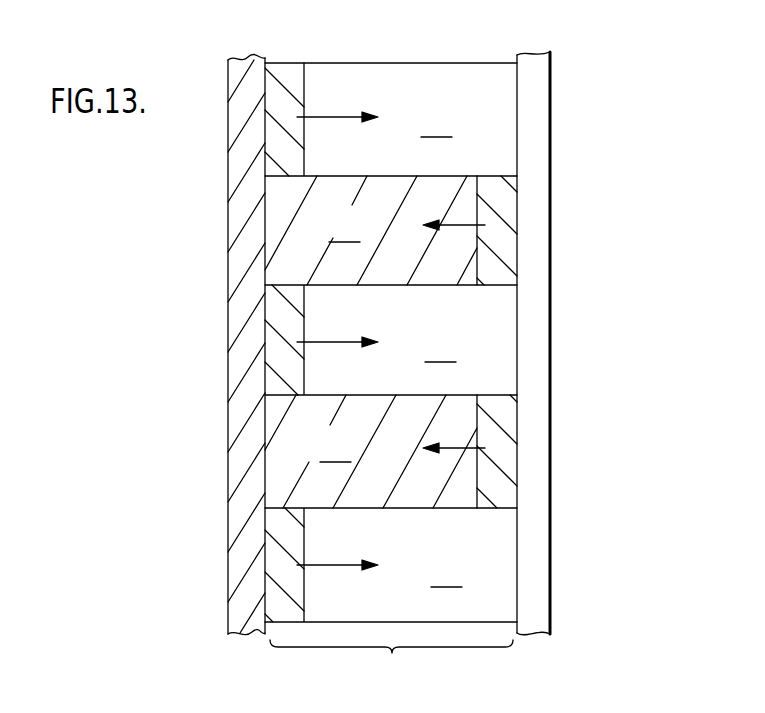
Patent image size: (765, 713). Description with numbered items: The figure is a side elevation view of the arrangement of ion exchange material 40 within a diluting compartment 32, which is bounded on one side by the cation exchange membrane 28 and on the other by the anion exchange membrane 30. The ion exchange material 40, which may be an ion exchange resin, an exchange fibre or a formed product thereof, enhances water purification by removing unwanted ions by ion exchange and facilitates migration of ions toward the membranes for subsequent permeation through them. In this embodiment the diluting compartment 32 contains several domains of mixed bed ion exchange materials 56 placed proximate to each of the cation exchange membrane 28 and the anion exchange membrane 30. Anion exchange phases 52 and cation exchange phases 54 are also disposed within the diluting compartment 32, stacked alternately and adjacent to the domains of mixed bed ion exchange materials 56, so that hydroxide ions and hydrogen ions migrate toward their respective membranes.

The cation exchange membrane 28 is at (240, 200).
The anion exchange membrane 30 is at (537, 142).
The diluting compartment 32 is at (391, 664).
The ion exchange material 40 is at (440, 51).
The anion exchange phase 52 is at (391, 342).
The cation exchange phase 54 is at (375, 342).
The mixed bed ion exchange material 56 is at (288, 77).